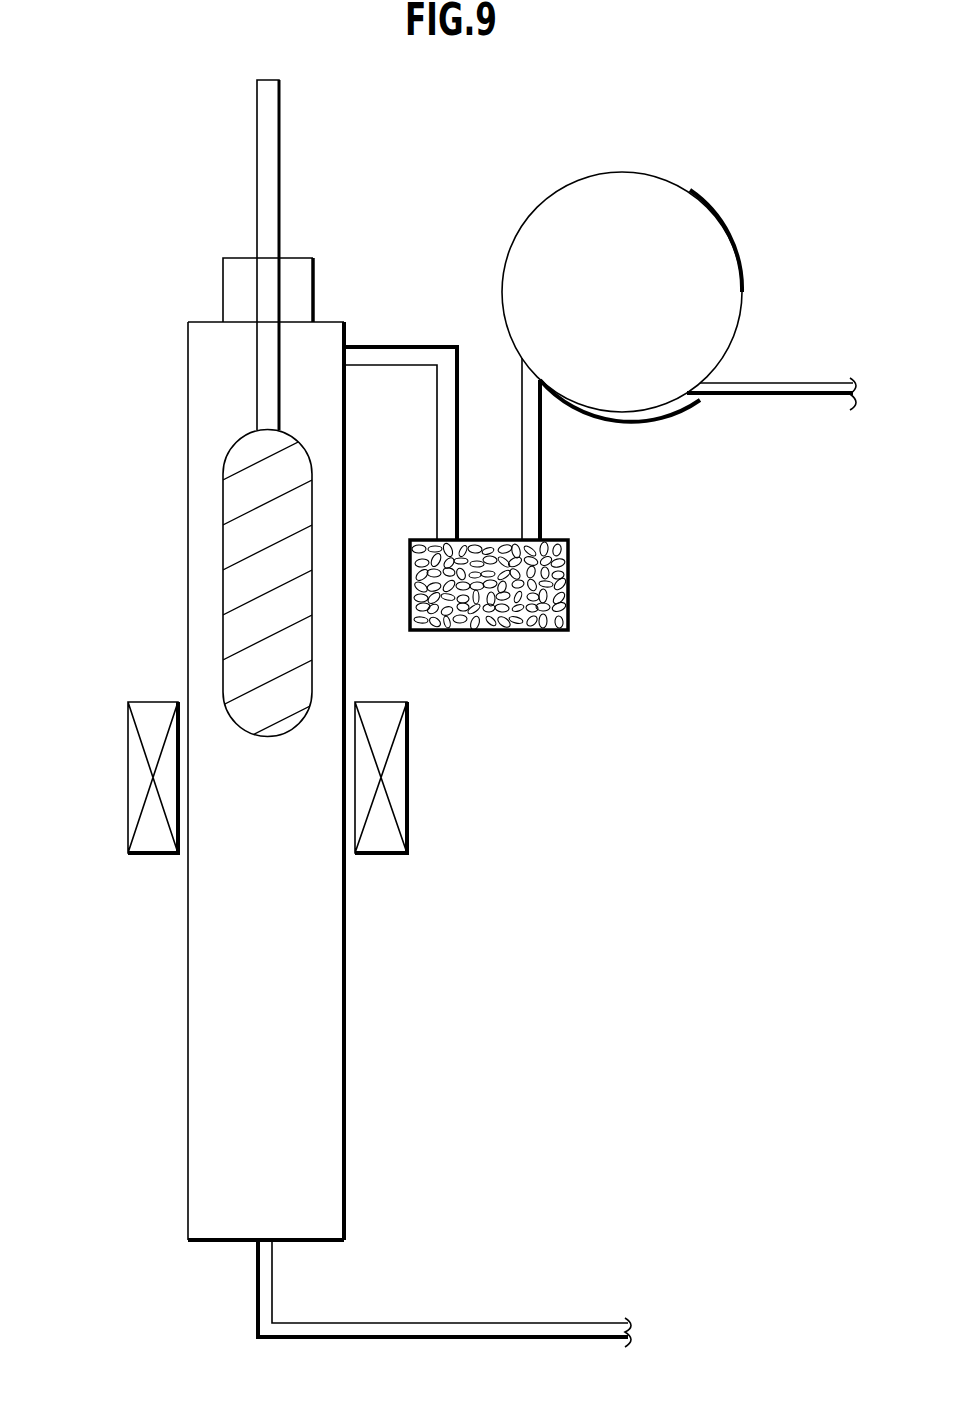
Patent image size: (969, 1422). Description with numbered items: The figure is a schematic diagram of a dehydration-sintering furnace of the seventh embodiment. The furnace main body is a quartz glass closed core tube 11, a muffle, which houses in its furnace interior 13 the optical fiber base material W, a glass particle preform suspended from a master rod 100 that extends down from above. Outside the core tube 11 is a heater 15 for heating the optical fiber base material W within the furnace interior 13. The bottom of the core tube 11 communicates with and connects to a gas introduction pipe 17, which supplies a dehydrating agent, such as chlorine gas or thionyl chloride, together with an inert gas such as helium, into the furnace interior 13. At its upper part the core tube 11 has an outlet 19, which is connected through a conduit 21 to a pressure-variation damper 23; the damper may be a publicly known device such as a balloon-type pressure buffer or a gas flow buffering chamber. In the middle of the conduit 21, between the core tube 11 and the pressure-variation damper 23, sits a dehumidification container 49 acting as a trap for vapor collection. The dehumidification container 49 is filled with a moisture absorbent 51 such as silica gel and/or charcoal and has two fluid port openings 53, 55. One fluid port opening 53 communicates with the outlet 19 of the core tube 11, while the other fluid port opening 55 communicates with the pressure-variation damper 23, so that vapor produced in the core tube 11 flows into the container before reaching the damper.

The core tube 11 is at (309, 749).
The furnace interior 13 is at (333, 1106).
The heater 15 is at (397, 782).
The gas introduction pipe 17 is at (515, 1322).
The outlet 19 is at (420, 413).
The conduit 21 is at (422, 443).
The pressure-variation damper 23 is at (718, 212).
The dehumidification container 49 is at (569, 575).
The moisture absorbent 51 is at (526, 597).
The fluid port opening 53 is at (450, 533).
The fluid port opening 55 is at (525, 533).
The master rod 100 is at (270, 190).
The optical fiber base material W is at (250, 582).